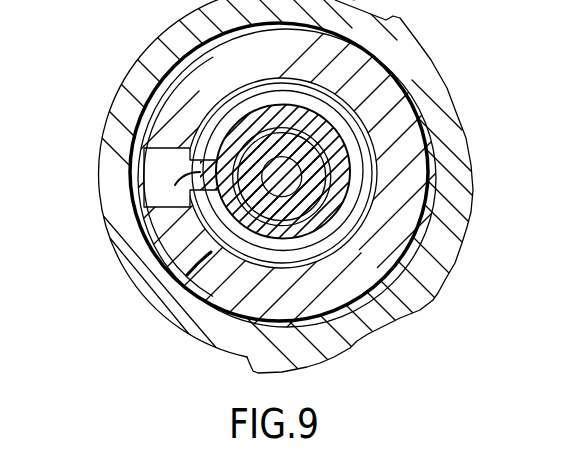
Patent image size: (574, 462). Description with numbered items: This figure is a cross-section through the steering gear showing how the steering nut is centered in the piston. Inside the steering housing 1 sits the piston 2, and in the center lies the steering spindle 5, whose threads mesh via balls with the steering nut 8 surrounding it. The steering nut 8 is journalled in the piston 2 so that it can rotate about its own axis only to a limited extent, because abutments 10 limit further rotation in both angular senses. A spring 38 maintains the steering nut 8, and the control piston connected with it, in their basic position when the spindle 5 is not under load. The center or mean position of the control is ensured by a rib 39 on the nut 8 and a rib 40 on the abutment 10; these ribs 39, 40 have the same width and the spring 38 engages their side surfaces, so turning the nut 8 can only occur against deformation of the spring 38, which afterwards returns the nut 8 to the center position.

The steering housing 1 is at (155, 57).
The piston 2 is at (153, 112).
The steering spindle 5 is at (312, 170).
The steering nut 8 is at (345, 197).
The abutment 10 is at (148, 157).
The spring 38 is at (188, 273).
The rib 39 is at (228, 237).
The rib 40 is at (195, 188).